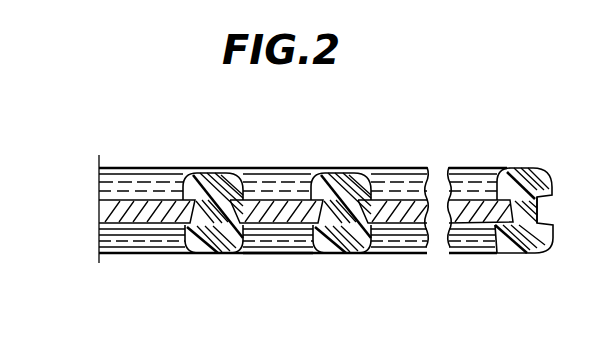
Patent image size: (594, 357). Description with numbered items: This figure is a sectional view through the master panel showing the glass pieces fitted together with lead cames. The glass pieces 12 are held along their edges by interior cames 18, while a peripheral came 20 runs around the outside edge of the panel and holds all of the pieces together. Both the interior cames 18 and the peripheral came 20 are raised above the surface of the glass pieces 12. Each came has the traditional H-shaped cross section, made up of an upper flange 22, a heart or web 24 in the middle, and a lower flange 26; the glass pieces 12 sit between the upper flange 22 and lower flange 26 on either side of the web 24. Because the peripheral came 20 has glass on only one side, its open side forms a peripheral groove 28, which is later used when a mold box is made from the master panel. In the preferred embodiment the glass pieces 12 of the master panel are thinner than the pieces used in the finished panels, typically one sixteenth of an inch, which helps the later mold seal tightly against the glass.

The glass piece 12 is at (400, 198).
The interior H-shaped lead came 18 is at (222, 177).
The peripheral H-shaped lead came 20 is at (520, 168).
The upper flange 22 is at (188, 193).
The heart or web 24 is at (295, 226).
The lower flange 26 is at (253, 253).
The peripheral groove 28 is at (542, 208).